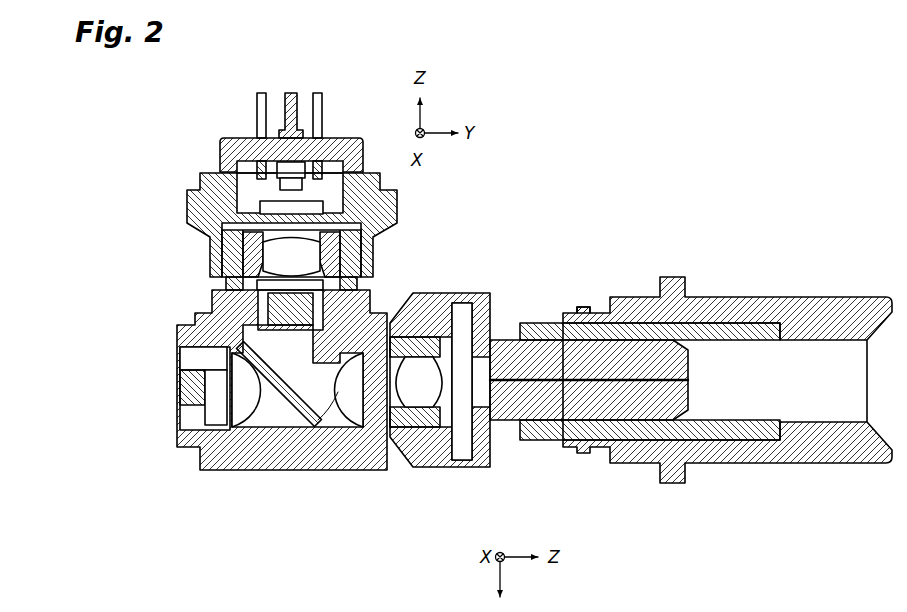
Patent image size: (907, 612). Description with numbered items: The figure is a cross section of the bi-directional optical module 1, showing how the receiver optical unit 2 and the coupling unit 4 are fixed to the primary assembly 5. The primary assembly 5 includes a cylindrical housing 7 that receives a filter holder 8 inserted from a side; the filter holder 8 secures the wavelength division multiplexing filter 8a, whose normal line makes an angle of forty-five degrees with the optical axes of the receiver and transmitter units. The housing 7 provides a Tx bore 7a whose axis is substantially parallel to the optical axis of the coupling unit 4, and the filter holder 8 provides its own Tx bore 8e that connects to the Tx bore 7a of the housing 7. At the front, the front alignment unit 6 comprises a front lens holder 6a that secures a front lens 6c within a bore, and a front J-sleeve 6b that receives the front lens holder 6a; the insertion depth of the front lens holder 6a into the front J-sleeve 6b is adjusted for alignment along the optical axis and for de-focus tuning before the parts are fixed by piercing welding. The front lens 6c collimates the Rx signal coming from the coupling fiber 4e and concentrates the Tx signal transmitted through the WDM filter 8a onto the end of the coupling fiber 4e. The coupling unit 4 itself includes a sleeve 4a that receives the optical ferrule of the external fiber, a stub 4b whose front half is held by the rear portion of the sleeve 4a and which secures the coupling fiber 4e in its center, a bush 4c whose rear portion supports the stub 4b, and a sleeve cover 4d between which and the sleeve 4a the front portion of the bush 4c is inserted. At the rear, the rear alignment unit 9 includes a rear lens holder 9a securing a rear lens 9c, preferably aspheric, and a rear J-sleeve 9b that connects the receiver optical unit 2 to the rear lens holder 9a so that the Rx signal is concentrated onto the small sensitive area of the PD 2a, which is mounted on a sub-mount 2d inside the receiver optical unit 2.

The optical module 1 is at (680, 192).
The receiver optical unit 2 is at (222, 152).
The PD 2a is at (305, 185).
The sub-mount 2d is at (283, 170).
The coupling unit 4 is at (790, 297).
The sleeve 4a is at (745, 328).
The stub 4b is at (690, 360).
The bush 4c is at (587, 313).
The sleeve cover 4d is at (853, 313).
The coupling fiber 4e is at (690, 382).
The primary assembly 5 is at (110, 190).
The front alignment unit 6 is at (485, 518).
The front lens holder 6a is at (410, 323).
The front J-sleeve 6b is at (465, 318).
The front lens 6c is at (418, 412).
The housing 7 is at (283, 445).
The Tx bore 7a is at (357, 408).
The filter holder 8 is at (227, 298).
The WDM filter 8a is at (272, 412).
The Tx bore 8e is at (323, 398).
The rear alignment unit 9 is at (150, 290).
The rear lens holder 9a is at (364, 251).
The rear J-sleeve 9b is at (394, 200).
The rear lens 9c is at (290, 258).